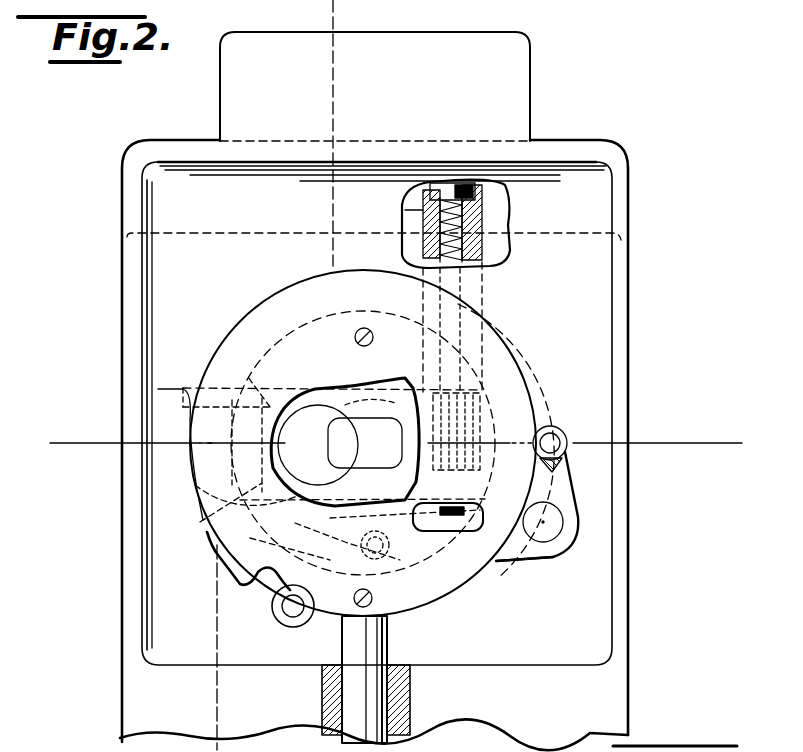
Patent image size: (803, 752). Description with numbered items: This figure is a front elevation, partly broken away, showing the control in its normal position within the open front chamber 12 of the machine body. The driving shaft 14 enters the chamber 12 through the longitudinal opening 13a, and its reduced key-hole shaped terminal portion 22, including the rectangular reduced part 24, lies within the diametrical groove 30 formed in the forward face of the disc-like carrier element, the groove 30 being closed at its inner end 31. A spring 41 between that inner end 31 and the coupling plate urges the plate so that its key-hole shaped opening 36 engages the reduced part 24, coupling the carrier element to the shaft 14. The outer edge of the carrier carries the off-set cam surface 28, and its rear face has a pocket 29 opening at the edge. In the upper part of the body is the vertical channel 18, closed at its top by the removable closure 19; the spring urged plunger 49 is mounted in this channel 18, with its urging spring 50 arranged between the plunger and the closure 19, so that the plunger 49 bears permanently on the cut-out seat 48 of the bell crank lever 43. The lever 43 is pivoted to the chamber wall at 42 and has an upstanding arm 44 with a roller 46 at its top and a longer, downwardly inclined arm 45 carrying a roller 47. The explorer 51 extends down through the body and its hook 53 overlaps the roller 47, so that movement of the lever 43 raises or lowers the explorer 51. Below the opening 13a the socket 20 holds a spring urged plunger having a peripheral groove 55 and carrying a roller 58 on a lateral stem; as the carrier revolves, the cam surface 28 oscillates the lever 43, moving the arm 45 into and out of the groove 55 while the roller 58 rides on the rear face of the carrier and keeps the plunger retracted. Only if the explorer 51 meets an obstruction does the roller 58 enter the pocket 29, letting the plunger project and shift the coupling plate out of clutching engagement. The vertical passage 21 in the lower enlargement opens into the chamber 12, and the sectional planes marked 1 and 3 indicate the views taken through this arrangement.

The section line 1- 1 is at (360, 15).
The section line 3- 3 is at (88, 388).
The open front chamber 12 is at (580, 590).
The opening 13a is at (464, 742).
The driving shaft 14 is at (322, 437).
The channel 18 is at (483, 260).
The removable closure 19 is at (478, 194).
The socket 20 is at (481, 220).
The passage 21 is at (410, 700).
The terminal portion 22 is at (333, 447).
The reduced part 24 is at (335, 440).
The cam surface 28 is at (520, 402).
The pocket 29 is at (183, 388).
The groove 30 is at (352, 387).
The inner end of groove 31 is at (505, 352).
The key-hole shaped opening 36 is at (265, 470).
The spring 41 is at (493, 333).
The pivot 42 is at (565, 525).
The bell crank lever 43 is at (552, 565).
The upstanding arm 44 is at (565, 490).
The horizontal arm 45 is at (233, 567).
The roller 46 is at (560, 432).
The roller 47 is at (260, 525).
The cut-out seat 48 is at (436, 514).
The spring urged plunger 49 is at (460, 514).
The urging spring 50 is at (410, 210).
The explorer 51 is at (390, 645).
The hook 53 is at (382, 547).
The peripheral groove 55 is at (288, 612).
The roller 58 is at (212, 566).